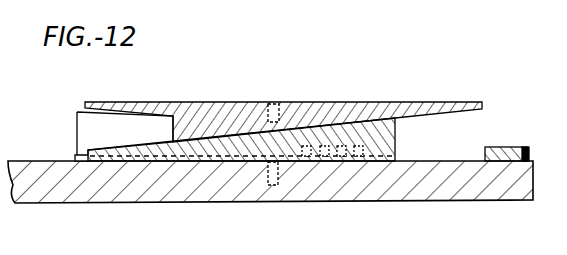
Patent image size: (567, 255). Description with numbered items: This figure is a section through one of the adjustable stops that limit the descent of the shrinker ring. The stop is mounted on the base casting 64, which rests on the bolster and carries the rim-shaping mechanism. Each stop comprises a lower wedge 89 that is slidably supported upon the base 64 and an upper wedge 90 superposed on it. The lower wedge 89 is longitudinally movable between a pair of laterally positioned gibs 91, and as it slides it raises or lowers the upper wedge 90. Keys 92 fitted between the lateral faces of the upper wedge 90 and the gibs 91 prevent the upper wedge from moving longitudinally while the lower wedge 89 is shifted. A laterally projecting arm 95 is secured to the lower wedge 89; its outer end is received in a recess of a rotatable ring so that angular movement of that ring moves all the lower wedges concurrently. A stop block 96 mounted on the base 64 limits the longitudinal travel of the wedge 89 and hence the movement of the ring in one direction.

The base casting 64 is at (421, 192).
The lower wedge 89 is at (395, 135).
The upper wedge 90 is at (327, 103).
The gib 91 is at (77, 125).
The key 92 is at (279, 103).
The laterally projecting arm 95 is at (345, 158).
The stop block 96 is at (510, 147).